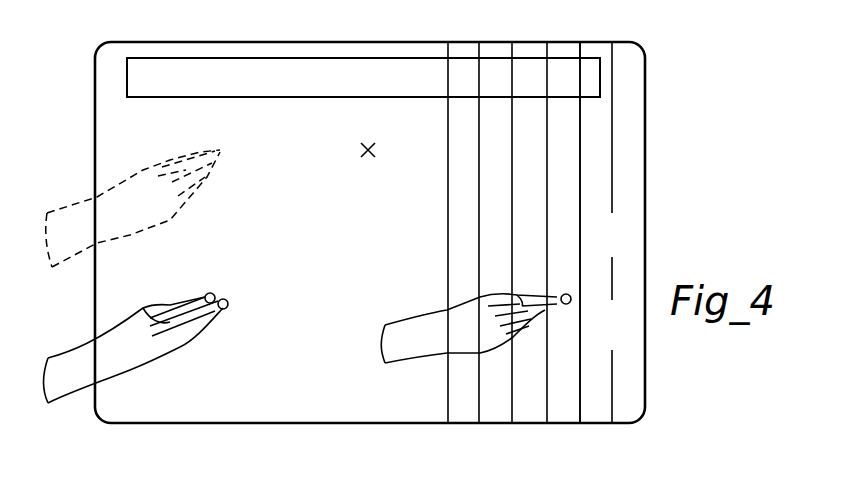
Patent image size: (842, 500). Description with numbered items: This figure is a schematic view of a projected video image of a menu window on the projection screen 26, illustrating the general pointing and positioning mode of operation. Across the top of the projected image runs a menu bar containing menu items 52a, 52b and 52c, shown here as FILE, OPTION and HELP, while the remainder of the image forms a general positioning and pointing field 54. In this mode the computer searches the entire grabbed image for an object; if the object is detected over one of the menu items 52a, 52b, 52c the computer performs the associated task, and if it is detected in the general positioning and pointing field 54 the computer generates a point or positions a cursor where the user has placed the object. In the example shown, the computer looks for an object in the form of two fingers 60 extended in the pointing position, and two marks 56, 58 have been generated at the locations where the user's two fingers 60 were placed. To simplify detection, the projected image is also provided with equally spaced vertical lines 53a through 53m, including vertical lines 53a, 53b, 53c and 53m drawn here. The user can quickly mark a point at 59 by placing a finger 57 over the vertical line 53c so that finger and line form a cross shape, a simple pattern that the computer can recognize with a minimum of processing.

The projection screen 26 is at (597, 42).
The menu item 52a is at (195, 72).
The menu item 52b is at (312, 72).
The menu item 52c is at (497, 76).
The vertical line 53a is at (612, 405).
The vertical line 53b is at (580, 400).
The vertical line 53c is at (546, 400).
The vertical line 53m is at (448, 400).
The general positioning and pointing field 54 is at (588, 198).
The mark 56 is at (376, 152).
The finger 57 is at (571, 301).
The mark 58 is at (222, 159).
The marked point 59 is at (558, 290).
The two fingers 60 is at (224, 309).